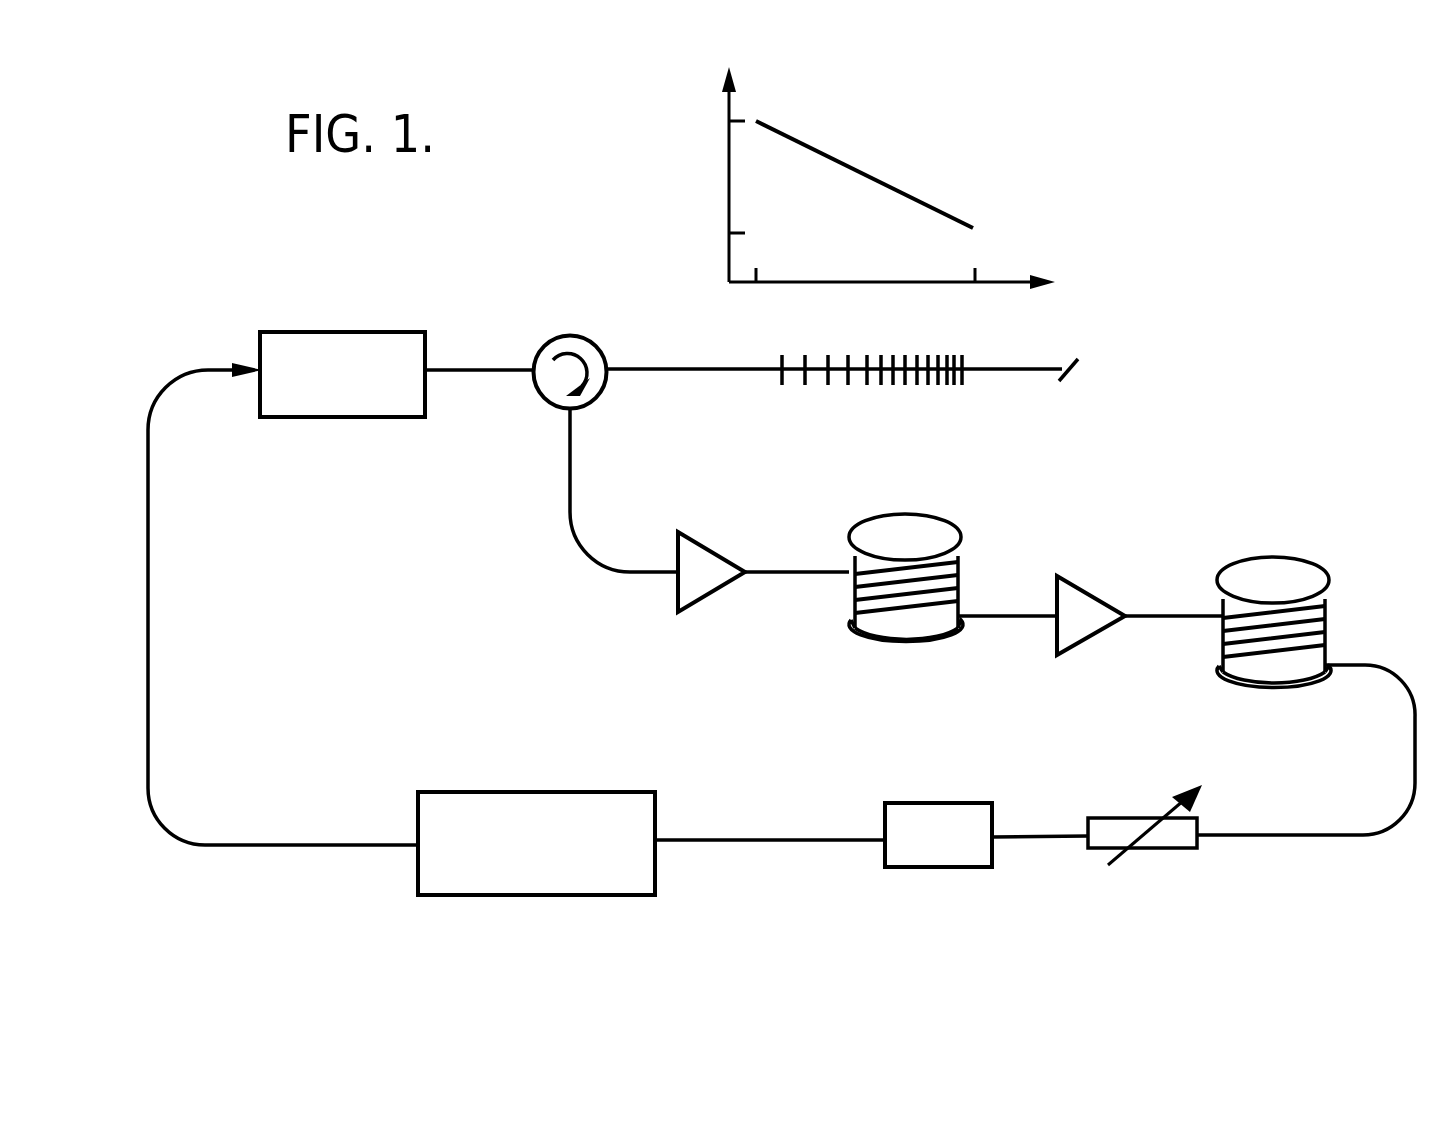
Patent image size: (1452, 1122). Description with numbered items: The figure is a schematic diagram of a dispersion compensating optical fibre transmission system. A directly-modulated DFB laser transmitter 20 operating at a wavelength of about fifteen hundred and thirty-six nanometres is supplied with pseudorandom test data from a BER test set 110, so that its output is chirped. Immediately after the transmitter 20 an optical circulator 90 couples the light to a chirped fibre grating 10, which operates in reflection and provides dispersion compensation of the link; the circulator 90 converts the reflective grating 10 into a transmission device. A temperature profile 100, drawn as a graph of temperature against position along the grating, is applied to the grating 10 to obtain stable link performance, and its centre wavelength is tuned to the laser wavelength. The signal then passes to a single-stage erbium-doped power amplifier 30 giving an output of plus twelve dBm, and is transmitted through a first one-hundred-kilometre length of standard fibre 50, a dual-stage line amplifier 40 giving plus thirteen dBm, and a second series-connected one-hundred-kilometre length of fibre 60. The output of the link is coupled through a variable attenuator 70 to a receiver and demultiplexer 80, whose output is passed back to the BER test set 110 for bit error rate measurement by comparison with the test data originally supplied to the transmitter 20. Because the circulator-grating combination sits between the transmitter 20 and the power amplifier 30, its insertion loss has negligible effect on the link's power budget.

The chirped fibre grating 10 is at (920, 383).
The DFB laser transmitter 20 is at (425, 395).
The power amplifier 30 is at (717, 550).
The line amplifier 40 is at (1103, 598).
The 100 km length of fibre 50 is at (927, 657).
The 100 km length of fibre 60 is at (1290, 700).
The variable attenuator 70 is at (1173, 848).
The receiver and demultiplexer 80 is at (965, 867).
The optical circulator 90 is at (596, 395).
The temperature profile 100 is at (960, 198).
The BER test set 110 is at (540, 792).